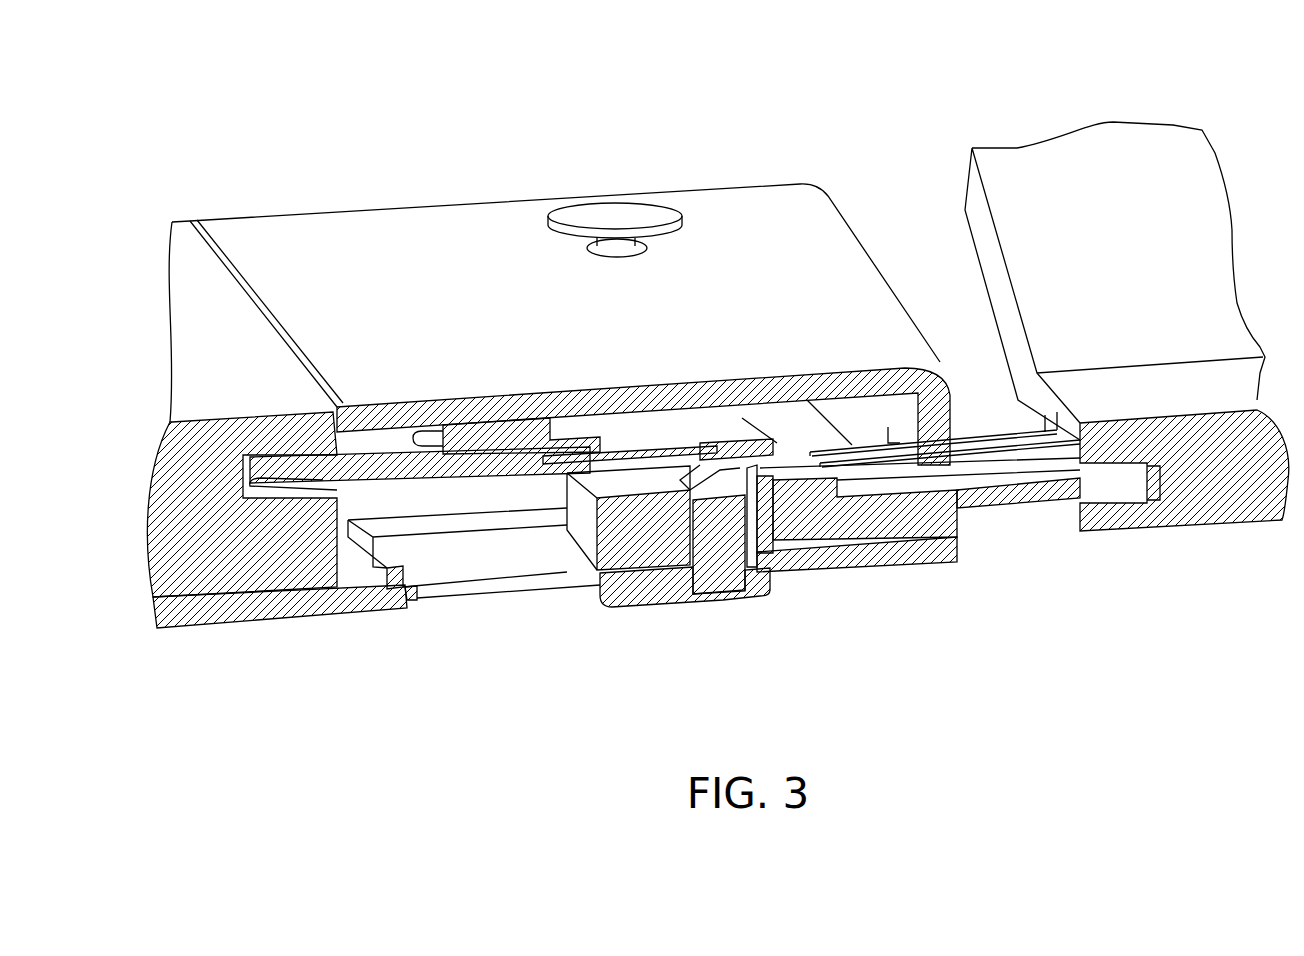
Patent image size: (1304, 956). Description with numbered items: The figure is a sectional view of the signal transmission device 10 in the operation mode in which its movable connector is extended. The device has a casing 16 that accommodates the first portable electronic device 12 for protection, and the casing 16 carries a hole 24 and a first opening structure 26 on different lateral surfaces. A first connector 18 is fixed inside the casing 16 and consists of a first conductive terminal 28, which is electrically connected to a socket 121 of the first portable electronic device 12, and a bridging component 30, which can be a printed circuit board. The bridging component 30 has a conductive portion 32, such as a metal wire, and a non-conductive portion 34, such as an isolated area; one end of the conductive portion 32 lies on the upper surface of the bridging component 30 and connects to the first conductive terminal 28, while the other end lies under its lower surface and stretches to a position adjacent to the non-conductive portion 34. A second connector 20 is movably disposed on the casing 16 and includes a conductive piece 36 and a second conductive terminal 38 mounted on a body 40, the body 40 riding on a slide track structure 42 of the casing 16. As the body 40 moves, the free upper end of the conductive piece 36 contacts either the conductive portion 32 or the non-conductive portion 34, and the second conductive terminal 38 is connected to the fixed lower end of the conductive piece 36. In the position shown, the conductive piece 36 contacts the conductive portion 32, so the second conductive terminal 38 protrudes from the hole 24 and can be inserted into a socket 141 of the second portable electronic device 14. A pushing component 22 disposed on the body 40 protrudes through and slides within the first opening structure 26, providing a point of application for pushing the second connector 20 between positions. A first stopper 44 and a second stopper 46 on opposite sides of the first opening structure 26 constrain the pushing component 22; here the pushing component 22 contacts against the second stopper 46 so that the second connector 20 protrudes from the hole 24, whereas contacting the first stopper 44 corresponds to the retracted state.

The signal transmission device 10 is at (246, 98).
The first portable electronic device 12 is at (207, 598).
The socket 121 is at (252, 515).
The second portable electronic device 14 is at (1121, 148).
The socket 141 is at (1163, 505).
The casing 16 is at (529, 193).
The first connector 18 is at (500, 137).
The second connector 20 is at (995, 676).
The pushing component 22 is at (717, 607).
The hole 24 is at (897, 430).
The first opening structure 26 is at (575, 618).
The first conductive terminal 28 is at (356, 470).
The bridging component 30 is at (512, 422).
The conductive portion 32 is at (707, 450).
The non-conductive portion 34 is at (638, 425).
The conductive piece 36 is at (890, 468).
The second conductive terminal 38 is at (935, 553).
The body 40 is at (783, 545).
The slide track structure 42 is at (373, 568).
The first stopper 44 is at (412, 600).
The second stopper 46 is at (770, 555).